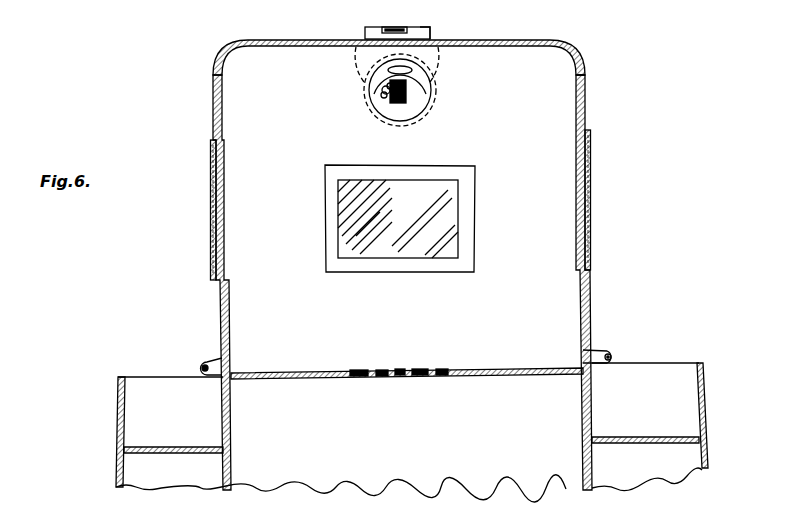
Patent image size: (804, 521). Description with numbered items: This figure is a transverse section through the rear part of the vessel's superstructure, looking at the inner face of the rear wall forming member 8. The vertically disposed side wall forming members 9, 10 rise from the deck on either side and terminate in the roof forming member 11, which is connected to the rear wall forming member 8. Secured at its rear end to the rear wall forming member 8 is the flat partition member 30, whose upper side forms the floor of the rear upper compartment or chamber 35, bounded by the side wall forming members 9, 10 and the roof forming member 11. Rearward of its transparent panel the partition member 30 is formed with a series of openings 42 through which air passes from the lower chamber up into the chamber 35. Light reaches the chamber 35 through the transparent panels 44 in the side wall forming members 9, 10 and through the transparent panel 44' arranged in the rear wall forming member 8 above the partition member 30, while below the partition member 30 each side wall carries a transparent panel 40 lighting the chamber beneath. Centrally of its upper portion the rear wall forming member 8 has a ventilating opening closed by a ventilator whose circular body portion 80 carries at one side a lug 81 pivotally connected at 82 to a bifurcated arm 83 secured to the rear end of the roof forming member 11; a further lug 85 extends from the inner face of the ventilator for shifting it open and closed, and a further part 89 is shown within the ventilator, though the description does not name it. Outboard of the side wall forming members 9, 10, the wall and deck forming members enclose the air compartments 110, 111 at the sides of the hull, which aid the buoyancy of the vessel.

The rear wall forming member 8 is at (407, 98).
The side wall forming member 9 is at (220, 308).
The side wall forming member 10 is at (591, 287).
The roof forming member 11 is at (508, 40).
The partition member 30 is at (293, 372).
The compartment or chamber 35 is at (586, 100).
The transparent panel 40 is at (222, 403).
The openings 42 is at (425, 371).
The transparent panel 44 is at (406, 205).
The transparent panel 44' is at (423, 218).
The circular body portion 80 is at (370, 92).
The lug 81 is at (403, 29).
The pivotal connection 82 is at (365, 33).
The bifurcated arm 83 is at (421, 28).
The lug 85 is at (410, 71).
The filament 89 is at (408, 89).
The air compartment 110 is at (341, 439).
The air compartment 111 is at (650, 427).